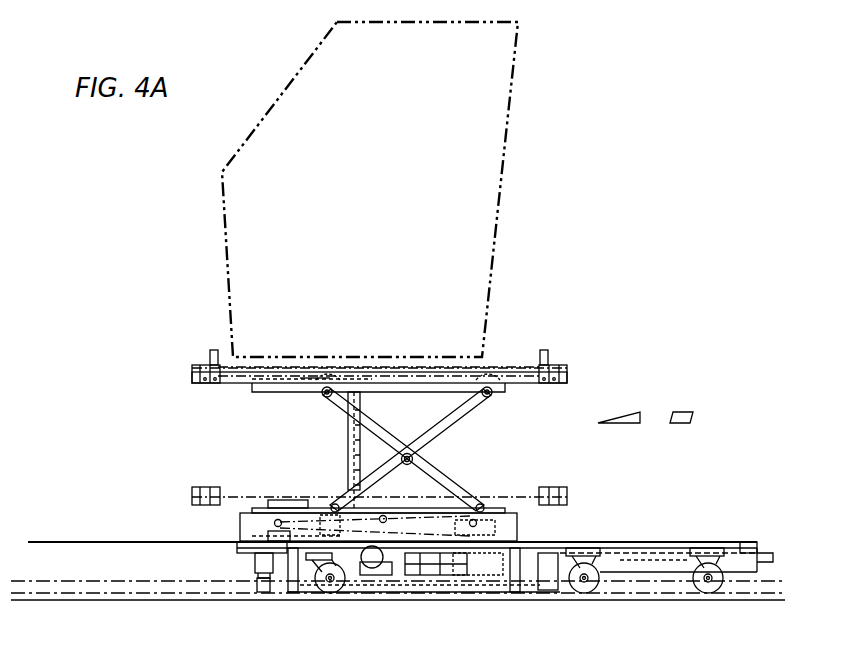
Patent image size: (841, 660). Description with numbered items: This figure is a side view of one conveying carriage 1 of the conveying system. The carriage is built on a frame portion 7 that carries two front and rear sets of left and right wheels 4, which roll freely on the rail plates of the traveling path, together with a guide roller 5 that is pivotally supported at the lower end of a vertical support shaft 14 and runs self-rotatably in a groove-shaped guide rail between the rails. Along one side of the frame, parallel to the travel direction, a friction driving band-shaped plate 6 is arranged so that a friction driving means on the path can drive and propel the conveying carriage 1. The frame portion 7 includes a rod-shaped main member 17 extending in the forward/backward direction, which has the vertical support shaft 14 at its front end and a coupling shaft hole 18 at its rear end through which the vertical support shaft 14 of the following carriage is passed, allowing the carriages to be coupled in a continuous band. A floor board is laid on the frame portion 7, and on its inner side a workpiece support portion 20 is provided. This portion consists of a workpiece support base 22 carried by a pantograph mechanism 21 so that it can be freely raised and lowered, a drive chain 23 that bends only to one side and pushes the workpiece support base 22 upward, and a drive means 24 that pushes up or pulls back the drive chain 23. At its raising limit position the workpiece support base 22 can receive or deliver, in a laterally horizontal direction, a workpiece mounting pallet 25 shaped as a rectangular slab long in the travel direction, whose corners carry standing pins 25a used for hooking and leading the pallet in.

The conveying carriage 1 is at (87, 538).
The wheels 4 is at (330, 594).
The guide roller 5 is at (264, 592).
The friction driving band-shaped plate 6 is at (626, 548).
The frame portion 7 is at (657, 562).
The vertical support shaft 14 is at (253, 566).
The rod-shaped main member 17 is at (676, 548).
The coupling shaft hole 18 is at (760, 548).
The workpiece support portion 20 is at (413, 357).
The pantograph mechanism 21 is at (443, 464).
The workpiece support base 22 is at (377, 383).
The drive chain 23 is at (348, 456).
The drive means 24 is at (412, 576).
The workpiece mounting pallet 25 is at (500, 356).
The pins 25a is at (209, 352).